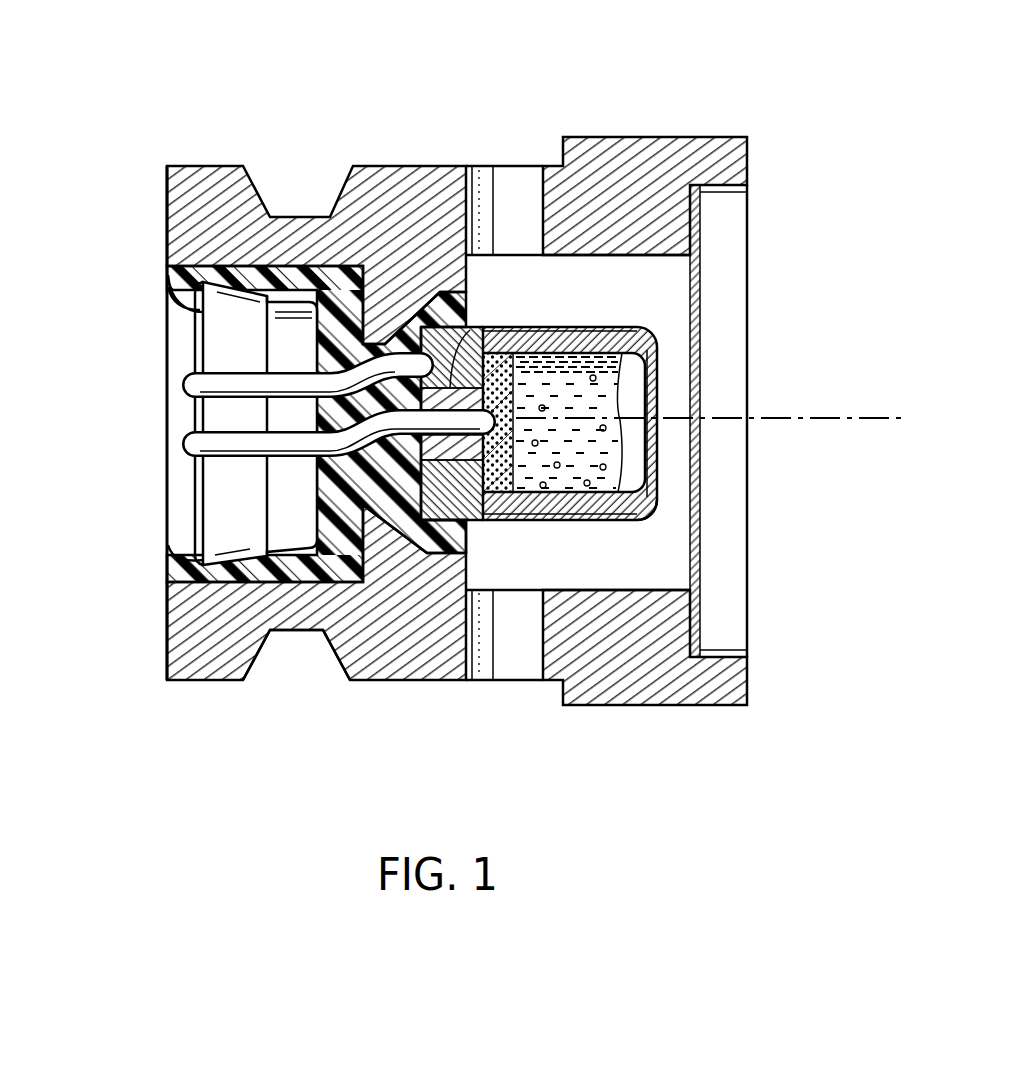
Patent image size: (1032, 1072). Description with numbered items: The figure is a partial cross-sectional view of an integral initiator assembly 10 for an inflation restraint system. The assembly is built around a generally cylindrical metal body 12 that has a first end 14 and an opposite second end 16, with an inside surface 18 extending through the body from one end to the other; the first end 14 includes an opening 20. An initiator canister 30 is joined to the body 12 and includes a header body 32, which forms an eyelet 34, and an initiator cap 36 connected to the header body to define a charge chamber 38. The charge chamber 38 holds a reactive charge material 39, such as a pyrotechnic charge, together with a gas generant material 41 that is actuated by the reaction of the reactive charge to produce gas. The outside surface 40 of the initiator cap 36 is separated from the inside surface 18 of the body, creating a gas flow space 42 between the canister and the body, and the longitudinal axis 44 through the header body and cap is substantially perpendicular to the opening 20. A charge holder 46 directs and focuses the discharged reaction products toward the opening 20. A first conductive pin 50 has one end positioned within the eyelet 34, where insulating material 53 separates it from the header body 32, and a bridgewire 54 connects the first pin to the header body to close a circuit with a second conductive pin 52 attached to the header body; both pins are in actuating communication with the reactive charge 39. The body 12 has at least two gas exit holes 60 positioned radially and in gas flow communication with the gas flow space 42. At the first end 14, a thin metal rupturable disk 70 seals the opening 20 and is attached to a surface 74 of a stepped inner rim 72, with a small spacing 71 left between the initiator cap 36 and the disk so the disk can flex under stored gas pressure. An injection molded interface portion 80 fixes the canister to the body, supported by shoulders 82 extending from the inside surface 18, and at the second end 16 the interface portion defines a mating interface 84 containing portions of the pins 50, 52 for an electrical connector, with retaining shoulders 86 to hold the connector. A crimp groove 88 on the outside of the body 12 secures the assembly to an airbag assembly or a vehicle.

The integral initiator assembly 10 is at (186, 122).
The body 12 is at (372, 166).
The first end 14 is at (750, 160).
The second end 16 is at (163, 230).
The inside surface 18 is at (603, 588).
The opening 20 is at (757, 325).
The initiator canister 30 is at (658, 512).
The header body 32 is at (505, 328).
The eyelet 34 is at (483, 328).
The initiator cap 36 is at (637, 326).
The charge chamber 38 is at (650, 392).
The reactive charge material 39 is at (537, 521).
The outside surface 40 is at (590, 326).
The gas generant material 41 is at (593, 521).
The gas flow space 42 is at (663, 565).
The longitudinal axis 44 is at (805, 418).
The charge holder 46 is at (640, 476).
The first conductive pin 50 is at (181, 448).
The second conductive pin 52 is at (181, 382).
The insulating material 53 is at (465, 524).
The bridgewire 54 is at (530, 328).
The gas exit holes 60 is at (505, 122).
The rupturable disk 70 is at (702, 292).
The spacing 71 is at (673, 443).
The stepped inner rim 72 is at (720, 620).
The surface 74 is at (692, 205).
The interface portion 80 is at (320, 495).
The shoulders 82 is at (313, 292).
The mating interface 84 is at (155, 334).
The retaining shoulders 86 is at (168, 540).
The crimp groove 88 is at (288, 633).